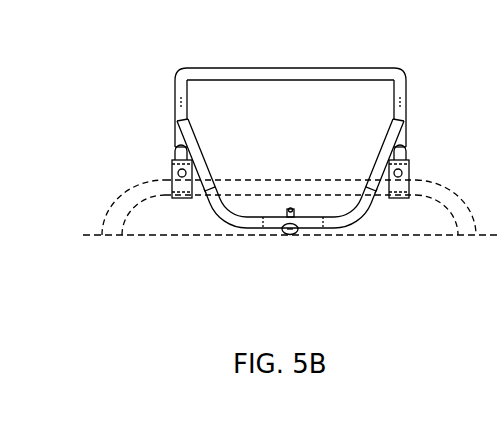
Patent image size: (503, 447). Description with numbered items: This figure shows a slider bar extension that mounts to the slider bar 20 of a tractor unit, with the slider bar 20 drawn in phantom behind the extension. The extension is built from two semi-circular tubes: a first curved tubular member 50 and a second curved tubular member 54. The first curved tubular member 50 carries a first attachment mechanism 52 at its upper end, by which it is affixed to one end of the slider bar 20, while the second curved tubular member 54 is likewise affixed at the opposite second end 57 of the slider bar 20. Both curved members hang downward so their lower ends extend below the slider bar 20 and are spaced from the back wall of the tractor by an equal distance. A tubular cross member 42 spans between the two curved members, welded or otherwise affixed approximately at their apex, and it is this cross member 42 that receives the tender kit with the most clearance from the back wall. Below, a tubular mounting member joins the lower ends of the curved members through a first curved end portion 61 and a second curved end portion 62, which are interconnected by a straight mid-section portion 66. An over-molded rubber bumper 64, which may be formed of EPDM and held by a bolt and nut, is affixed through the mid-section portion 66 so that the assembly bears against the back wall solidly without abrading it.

The slider bar 20 is at (113, 222).
The tubular cross member 42 is at (323, 68).
The first curved tubular member 50 is at (175, 85).
The first attachment mechanism 52 is at (178, 198).
The second curved tubular member 54 is at (407, 86).
The second end of the slider bar 57 is at (403, 198).
The first curved end portion 61 is at (210, 203).
The second curved end portion 62 is at (365, 207).
The over-molded rubber bumper 64 is at (288, 235).
The straight mid-section portion 66 is at (267, 217).